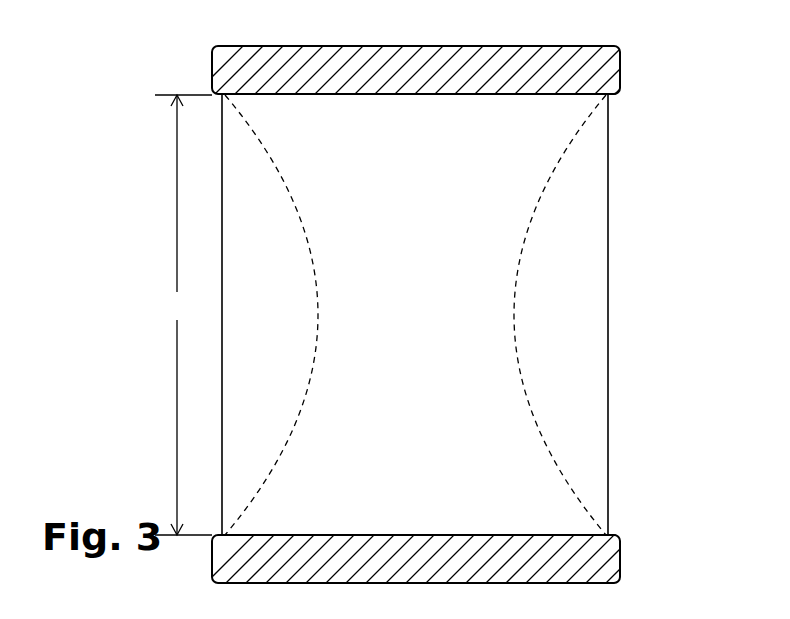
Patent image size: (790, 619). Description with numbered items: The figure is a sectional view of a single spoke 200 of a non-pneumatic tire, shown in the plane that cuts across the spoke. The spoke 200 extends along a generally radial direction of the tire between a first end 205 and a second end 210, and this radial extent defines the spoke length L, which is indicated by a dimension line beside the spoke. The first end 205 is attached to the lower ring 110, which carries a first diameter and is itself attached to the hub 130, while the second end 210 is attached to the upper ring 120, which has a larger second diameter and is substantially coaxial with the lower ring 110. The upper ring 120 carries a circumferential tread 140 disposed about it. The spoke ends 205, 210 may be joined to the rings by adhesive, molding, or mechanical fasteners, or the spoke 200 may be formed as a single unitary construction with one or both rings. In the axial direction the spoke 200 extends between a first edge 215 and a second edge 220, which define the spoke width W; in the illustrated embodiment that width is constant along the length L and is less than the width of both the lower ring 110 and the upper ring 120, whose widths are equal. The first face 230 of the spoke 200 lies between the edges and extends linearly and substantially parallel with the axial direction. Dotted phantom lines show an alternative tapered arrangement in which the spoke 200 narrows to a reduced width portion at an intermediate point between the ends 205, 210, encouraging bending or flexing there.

The spoke 200 is at (441, 299).
The circumferential tread 140 is at (578, 75).
The hub 130 is at (598, 572).
The upper ring 120 is at (612, 96).
The lower ring 110 is at (613, 533).
The second end 210 is at (430, 95).
The first end 205 is at (405, 533).
The first edge 215 is at (222, 292).
The second edge 220 is at (608, 375).
The first face 230 is at (432, 307).